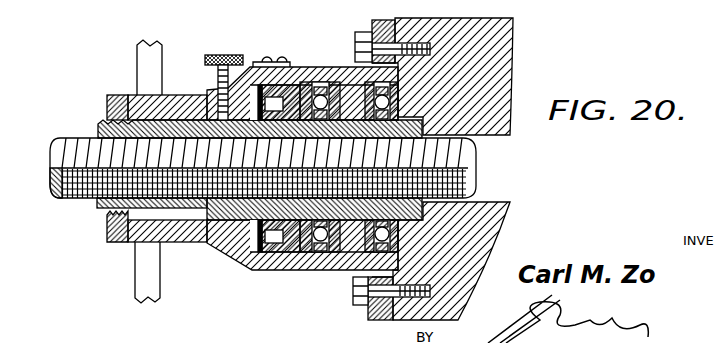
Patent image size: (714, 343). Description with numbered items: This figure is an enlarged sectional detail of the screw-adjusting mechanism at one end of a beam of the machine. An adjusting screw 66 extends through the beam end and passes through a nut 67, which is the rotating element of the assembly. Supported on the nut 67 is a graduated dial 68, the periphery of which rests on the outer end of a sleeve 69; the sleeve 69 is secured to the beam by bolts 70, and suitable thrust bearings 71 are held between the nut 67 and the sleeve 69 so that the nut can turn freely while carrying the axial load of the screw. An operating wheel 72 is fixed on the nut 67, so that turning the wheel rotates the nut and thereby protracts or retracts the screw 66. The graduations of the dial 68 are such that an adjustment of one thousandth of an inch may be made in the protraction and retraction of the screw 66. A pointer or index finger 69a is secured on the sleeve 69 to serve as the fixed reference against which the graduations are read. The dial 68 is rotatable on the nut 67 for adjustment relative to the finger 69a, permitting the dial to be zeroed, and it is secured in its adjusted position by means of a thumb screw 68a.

The adjusting screw 66 is at (71, 199).
The nut 67 is at (278, 267).
The graduated dial 68 is at (233, 247).
The thumb screw 68a is at (213, 40).
The sleeve 69 is at (327, 262).
The pointer or index finger 69a is at (250, 67).
The bolts 70 is at (379, 306).
The thrust bearings 71 is at (360, 80).
The operating wheel 72 is at (143, 107).